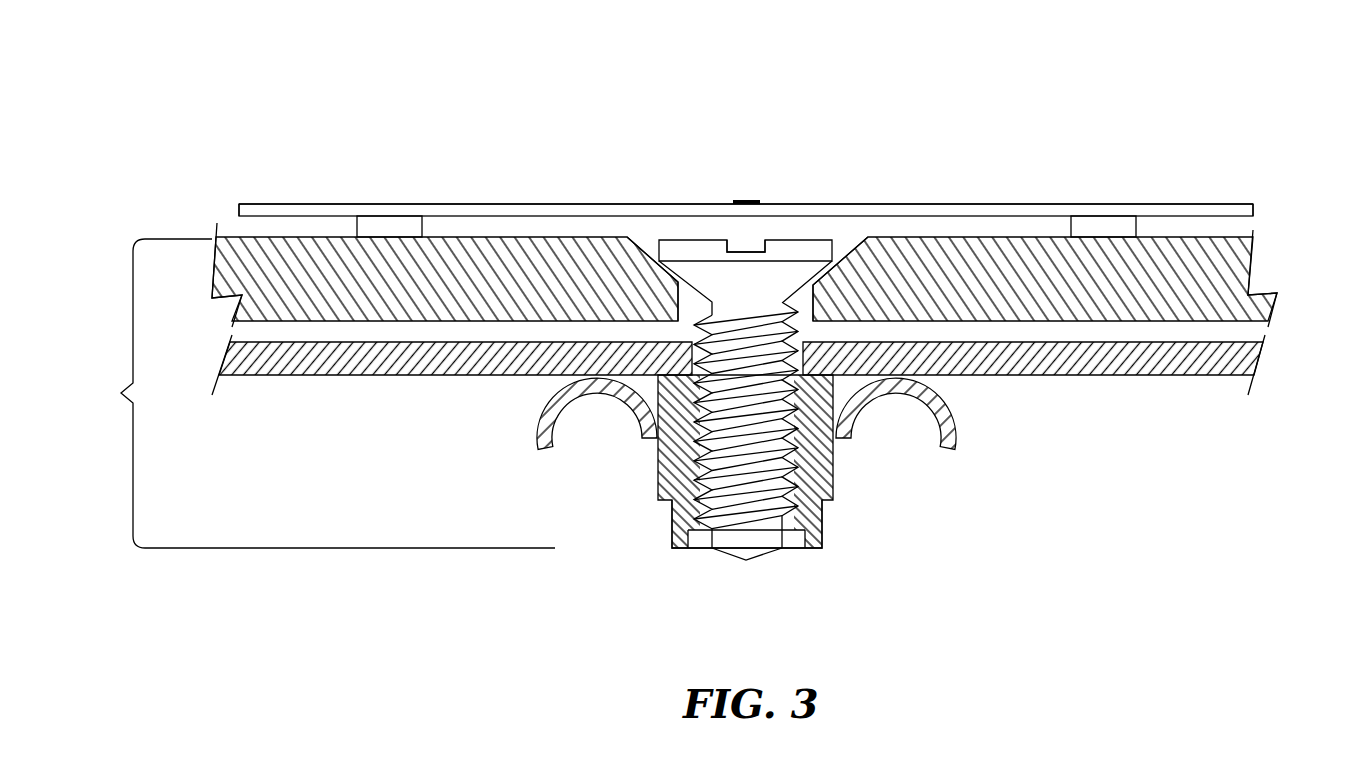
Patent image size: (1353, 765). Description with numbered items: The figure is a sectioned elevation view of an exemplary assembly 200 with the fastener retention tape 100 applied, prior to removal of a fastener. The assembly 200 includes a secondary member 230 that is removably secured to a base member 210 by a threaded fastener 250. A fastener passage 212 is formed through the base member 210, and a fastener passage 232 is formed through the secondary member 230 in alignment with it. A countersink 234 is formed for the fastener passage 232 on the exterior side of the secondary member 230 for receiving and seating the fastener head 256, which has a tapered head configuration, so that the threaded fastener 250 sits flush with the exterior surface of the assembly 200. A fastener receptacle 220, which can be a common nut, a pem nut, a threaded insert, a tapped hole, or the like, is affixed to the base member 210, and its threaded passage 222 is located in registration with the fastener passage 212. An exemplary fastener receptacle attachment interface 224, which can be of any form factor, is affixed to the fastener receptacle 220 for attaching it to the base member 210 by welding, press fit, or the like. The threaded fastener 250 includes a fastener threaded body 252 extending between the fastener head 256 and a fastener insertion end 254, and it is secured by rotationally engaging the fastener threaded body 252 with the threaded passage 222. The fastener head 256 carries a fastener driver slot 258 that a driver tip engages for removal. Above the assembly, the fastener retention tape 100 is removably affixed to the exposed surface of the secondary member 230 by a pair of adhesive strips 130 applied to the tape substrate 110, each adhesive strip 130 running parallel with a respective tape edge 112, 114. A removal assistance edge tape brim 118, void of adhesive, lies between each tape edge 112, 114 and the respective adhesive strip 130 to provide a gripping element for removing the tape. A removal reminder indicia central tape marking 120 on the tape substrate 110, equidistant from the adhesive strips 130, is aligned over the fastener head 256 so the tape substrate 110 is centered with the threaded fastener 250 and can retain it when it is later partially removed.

The fastener retention tape 100 is at (466, 118).
The tape substrate 110 is at (963, 204).
The tape edge 112 is at (1253, 208).
The tape edge 114 is at (239, 207).
The removal assistance edge tape brim 118 is at (286, 204).
The removal reminder indicia central tape marking 120 is at (746, 200).
The adhesive strip 130 is at (387, 218).
The assembly 200 is at (316, 393).
The base member 210 is at (252, 362).
The fastener passage 212 is at (657, 422).
The fastener receptacle 220 is at (822, 522).
The threaded passage 222 is at (672, 520).
The fastener receptacle attachment interface 224 is at (957, 447).
The secondary member 230 is at (252, 275).
The fastener passage 232 is at (790, 298).
The countersink 234 is at (643, 247).
The threaded fastener 250 is at (697, 389).
The fastener threaded body 252 is at (765, 505).
The fastener insertion end 254 is at (746, 562).
The fastener head 256 is at (689, 240).
The fastener driver slot 258 is at (750, 252).